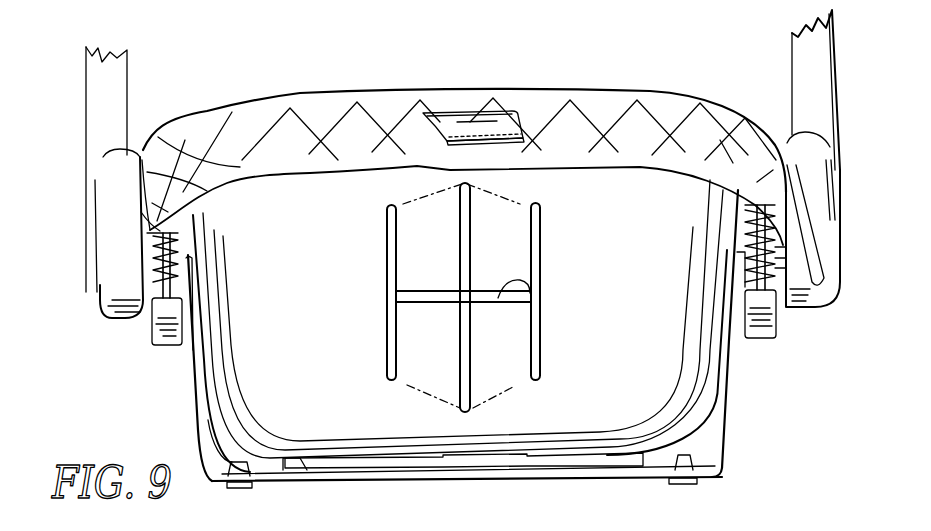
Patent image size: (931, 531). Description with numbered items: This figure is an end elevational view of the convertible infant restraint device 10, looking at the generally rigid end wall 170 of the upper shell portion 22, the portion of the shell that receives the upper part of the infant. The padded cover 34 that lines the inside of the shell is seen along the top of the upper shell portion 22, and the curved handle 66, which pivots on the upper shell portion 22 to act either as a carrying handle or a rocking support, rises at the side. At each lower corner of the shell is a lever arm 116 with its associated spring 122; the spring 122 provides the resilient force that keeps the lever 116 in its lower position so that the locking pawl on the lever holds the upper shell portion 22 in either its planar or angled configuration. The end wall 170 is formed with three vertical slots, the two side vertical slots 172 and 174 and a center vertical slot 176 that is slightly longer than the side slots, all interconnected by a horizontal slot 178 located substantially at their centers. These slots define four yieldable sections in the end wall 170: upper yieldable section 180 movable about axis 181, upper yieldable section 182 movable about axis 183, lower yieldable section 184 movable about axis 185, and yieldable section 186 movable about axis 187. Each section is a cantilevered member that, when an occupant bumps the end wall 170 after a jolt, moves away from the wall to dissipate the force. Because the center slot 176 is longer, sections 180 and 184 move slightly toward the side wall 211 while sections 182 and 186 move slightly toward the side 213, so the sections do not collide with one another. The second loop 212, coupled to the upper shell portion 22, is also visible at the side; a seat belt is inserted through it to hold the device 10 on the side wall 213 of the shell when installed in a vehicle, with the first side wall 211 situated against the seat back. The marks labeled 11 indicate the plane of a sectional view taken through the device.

The convertible infant restraint device 10 is at (614, 64).
The section line for FIG. 11 is at (152, 16).
The upper shell portion 22 is at (309, 88).
The padded cover 34 is at (342, 105).
The curved handle 66 is at (808, 78).
The lever arm 116 is at (173, 313).
The spring 122 is at (147, 262).
The end wall 170 is at (313, 233).
The side vertical slot 172 is at (390, 252).
The side vertical slot 174 is at (545, 262).
The center vertical slot 176 is at (466, 270).
The horizontal slot 178 is at (530, 291).
The upper yieldable section 180 is at (408, 273).
The axis 181 is at (403, 204).
The upper yieldable section 182 is at (518, 239).
The axis 183 is at (520, 204).
The lower yieldable section 184 is at (395, 346).
The axis 185 is at (407, 385).
The yieldable section 186 is at (518, 344).
The axis 187 is at (507, 393).
The side wall 211 is at (178, 388).
The second loop 212 is at (812, 232).
The side wall 213 is at (744, 408).